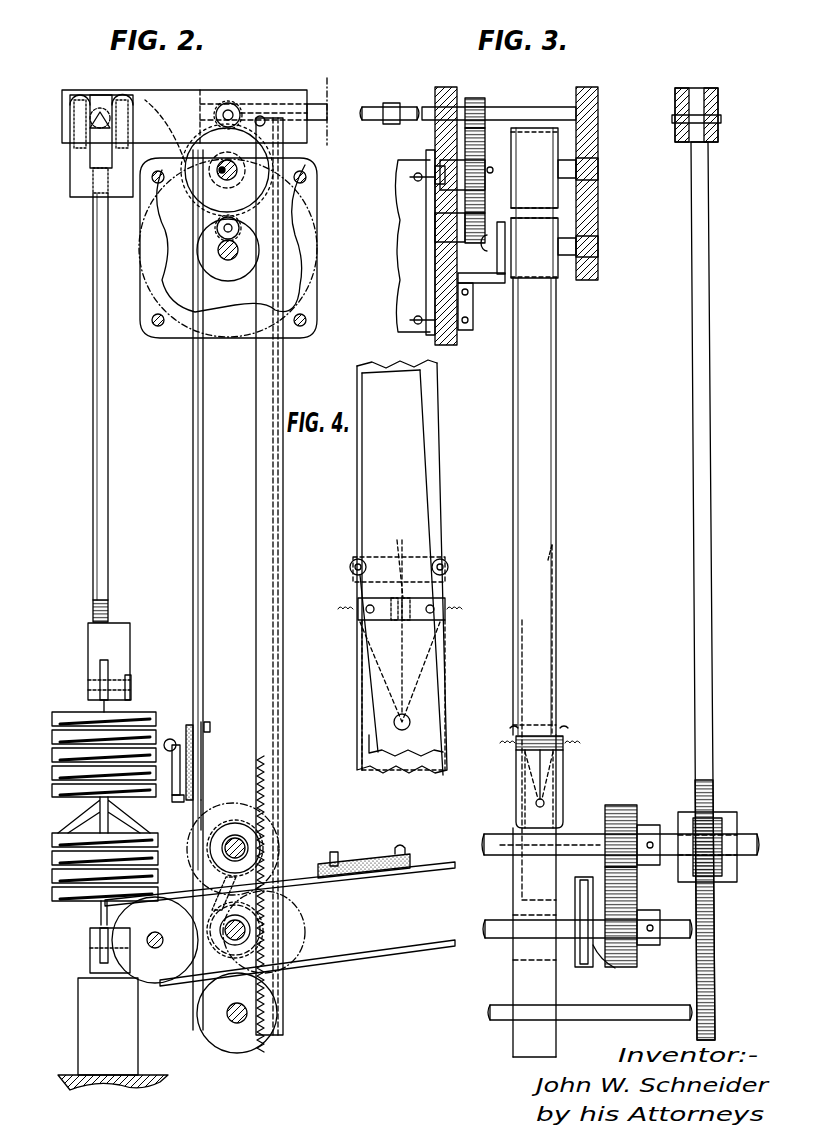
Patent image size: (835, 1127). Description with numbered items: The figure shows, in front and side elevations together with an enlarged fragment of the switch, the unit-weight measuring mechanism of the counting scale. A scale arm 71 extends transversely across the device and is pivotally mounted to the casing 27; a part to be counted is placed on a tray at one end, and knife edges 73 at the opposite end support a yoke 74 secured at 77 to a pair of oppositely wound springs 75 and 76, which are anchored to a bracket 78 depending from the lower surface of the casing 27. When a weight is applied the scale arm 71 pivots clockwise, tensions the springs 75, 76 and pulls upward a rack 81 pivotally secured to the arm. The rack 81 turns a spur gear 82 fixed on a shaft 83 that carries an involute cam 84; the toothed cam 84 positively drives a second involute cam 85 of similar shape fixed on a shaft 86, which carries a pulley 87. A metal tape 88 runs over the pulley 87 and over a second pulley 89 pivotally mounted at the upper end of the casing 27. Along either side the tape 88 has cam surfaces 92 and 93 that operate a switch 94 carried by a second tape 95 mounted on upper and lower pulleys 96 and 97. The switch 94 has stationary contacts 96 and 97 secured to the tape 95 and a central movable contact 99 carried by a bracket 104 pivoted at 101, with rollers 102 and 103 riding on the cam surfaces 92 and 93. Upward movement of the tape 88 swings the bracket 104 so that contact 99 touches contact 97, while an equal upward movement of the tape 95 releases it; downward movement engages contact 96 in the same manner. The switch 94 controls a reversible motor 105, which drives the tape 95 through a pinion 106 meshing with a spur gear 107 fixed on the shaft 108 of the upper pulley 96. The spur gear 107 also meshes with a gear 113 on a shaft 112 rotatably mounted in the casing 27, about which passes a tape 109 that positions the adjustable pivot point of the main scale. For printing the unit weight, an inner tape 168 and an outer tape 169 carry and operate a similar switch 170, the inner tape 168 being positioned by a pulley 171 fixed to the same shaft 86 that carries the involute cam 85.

In FIG. 2, the casing 27 is at (70, 1076).
In FIG. 3, the casing 27 is at (440, 92).
In FIG. 2, the scale arm 71 is at (205, 92).
In FIG. 3, the scale arm 71 is at (710, 90).
In FIG. 2, the knife edges 73 is at (98, 112).
In FIG. 2, the yoke 74 is at (80, 200).
In FIG. 2, the spring 75 is at (58, 760).
In FIG. 2, the spring 76 is at (58, 852).
In FIG. 2, the spring securing point 77 is at (88, 684).
In FIG. 2, the bracket 78 is at (78, 1023).
In FIG. 2, the rack 81 is at (256, 530).
In FIG. 3, the rack 81 is at (694, 530).
In FIG. 2, the spur gear 82 is at (238, 826).
In FIG. 3, the spur gear 82 is at (733, 818).
In FIG. 2, the shaft 83 is at (245, 848).
In FIG. 3, the shaft 83 is at (495, 840).
In FIG. 2, the involute cam 84 is at (187, 858).
In FIG. 3, the involute cam 84 is at (622, 808).
In FIG. 2, the second involute cam 85 is at (262, 962).
In FIG. 3, the second involute cam 85 is at (637, 962).
In FIG. 2, the shaft 86 is at (215, 935).
In FIG. 3, the shaft 86 is at (495, 920).
In FIG. 2, the pulley 87 is at (280, 940).
In FIG. 3, the pulley 87 is at (518, 950).
In FIG. 2, the metal tape 88 is at (204, 655).
In FIG. 4, the metal tape 88 is at (387, 488).
In FIG. 2, the second pulley 89 is at (215, 255).
In FIG. 3, the second pulley 89 is at (560, 280).
In FIG. 3, the cam surface 92 is at (522, 872).
In FIG. 4, the cam surface 92 is at (427, 495).
In FIG. 3, the cam surface 93 is at (554, 605).
In FIG. 4, the cam surface 93 is at (372, 745).
In FIG. 2, the switch 94 is at (193, 745).
In FIG. 3, the switch 94 is at (598, 783).
In FIG. 4, the switch 94 is at (485, 646).
In FIG. 2, the second tape 95 is at (193, 456).
In FIG. 3, the second tape 95 is at (557, 405).
In FIG. 4, the second tape 95 is at (430, 402).
In FIG. 2, the upper pulley / stationary contact 96 is at (188, 150).
In FIG. 3, the upper pulley / stationary contact 96 is at (556, 125).
In FIG. 4, the upper pulley / stationary contact 96 is at (382, 621).
In FIG. 2, the lower pulley / stationary contact 97 is at (210, 1025).
In FIG. 3, the lower pulley / stationary contact 97 is at (512, 742).
In FIG. 4, the lower pulley / stationary contact 97 is at (450, 600).
In FIG. 2, the central movable contact 99 is at (175, 790).
In FIG. 4, the central movable contact 99 is at (398, 563).
In FIG. 2, the pivot point 101 is at (203, 800).
In FIG. 3, the pivot point 101 is at (536, 803).
In FIG. 4, the pivot point 101 is at (410, 722).
In FIG. 4, the roller 102 is at (448, 562).
In FIG. 2, the roller 103 is at (208, 722).
In FIG. 4, the roller 103 is at (350, 566).
In FIG. 2, the bracket 104 is at (202, 735).
In FIG. 4, the bracket 104 is at (370, 684).
In FIG. 2, the reversible motor 105 is at (300, 296).
In FIG. 3, the reversible motor 105 is at (410, 316).
In FIG. 2, the pinion 106 is at (245, 230).
In FIG. 3, the pinion 106 is at (475, 243).
In FIG. 2, the spur gear 107 is at (195, 120).
In FIG. 3, the spur gear 107 is at (465, 145).
In FIG. 2, the shaft 108 is at (240, 160).
In FIG. 3, the shaft 108 is at (565, 162).
In FIG. 2, the tape 109 is at (310, 102).
In FIG. 3, the tape 109 is at (385, 102).
In FIG. 2, the shaft 112 is at (232, 103).
In FIG. 3, the shaft 112 is at (505, 105).
In FIG. 2, the gear 113 is at (226, 100).
In FIG. 3, the gear 113 is at (475, 96).
In FIG. 2, the inner tape 168 is at (380, 948).
In FIG. 3, the inner tape 168 is at (575, 900).
In FIG. 2, the outer tape 169 is at (432, 866).
In FIG. 3, the outer tape 169 is at (583, 966).
In FIG. 2, the switch 170 is at (365, 860).
In FIG. 2, the pulley 171 is at (215, 906).
In FIG. 3, the pulley 171 is at (610, 968).